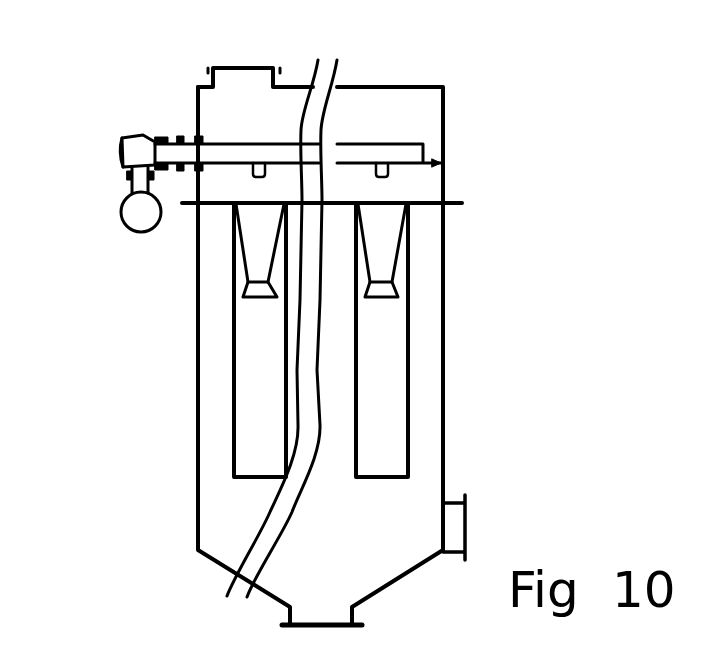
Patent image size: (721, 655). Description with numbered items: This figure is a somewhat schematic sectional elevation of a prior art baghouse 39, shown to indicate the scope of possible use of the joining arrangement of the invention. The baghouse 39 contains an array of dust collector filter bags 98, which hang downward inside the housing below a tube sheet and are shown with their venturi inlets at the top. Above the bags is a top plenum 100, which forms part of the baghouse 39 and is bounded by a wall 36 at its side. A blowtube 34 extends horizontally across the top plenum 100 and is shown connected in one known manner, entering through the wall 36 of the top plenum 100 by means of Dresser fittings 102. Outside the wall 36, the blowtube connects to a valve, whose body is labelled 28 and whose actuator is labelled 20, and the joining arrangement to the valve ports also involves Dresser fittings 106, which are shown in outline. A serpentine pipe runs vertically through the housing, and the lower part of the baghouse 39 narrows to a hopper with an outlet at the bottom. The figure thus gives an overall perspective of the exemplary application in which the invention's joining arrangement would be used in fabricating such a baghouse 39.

The top plenum 100 is at (427, 117).
The baghouse 39 is at (444, 306).
The wall 36 is at (200, 116).
The Dresser fittings 102 is at (180, 136).
The Dresser fittings 106 is at (162, 136).
The valve 28 is at (126, 136).
The valve actuator 20 is at (147, 233).
The blowtube 34 is at (334, 149).
The dust collector filter bags 98 is at (233, 438).